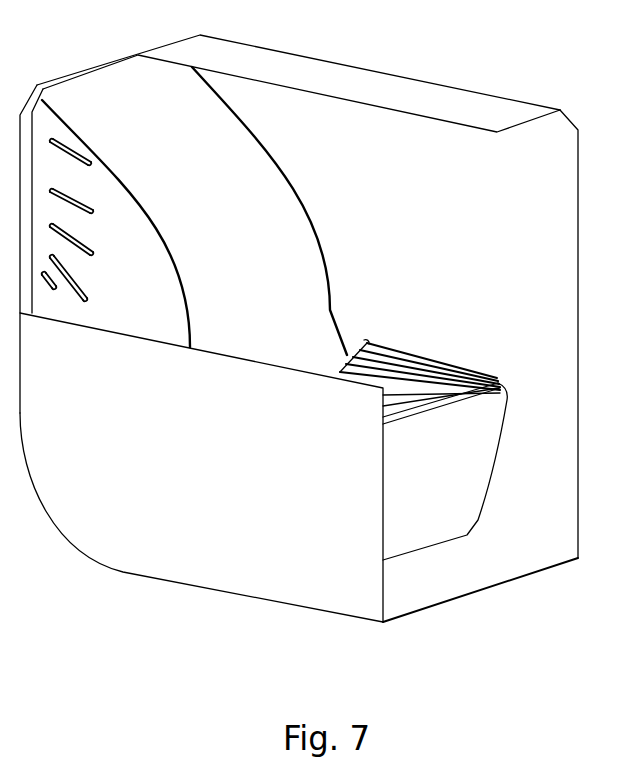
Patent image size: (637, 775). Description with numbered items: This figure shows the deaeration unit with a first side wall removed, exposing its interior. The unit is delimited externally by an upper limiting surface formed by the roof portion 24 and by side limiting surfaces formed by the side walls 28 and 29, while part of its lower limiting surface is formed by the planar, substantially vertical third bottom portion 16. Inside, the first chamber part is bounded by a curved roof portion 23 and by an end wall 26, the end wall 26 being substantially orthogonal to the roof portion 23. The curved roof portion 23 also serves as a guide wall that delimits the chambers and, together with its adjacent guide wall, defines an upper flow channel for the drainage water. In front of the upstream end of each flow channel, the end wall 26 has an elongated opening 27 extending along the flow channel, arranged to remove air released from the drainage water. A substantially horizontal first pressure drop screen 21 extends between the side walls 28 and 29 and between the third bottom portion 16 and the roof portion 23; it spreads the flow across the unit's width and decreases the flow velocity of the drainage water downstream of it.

The third bottom portion 16 is at (437, 485).
The first pressure drop screen 21 is at (467, 382).
The roof portion 23 is at (260, 247).
The roof portion 24 is at (411, 104).
The end wall 26 is at (150, 298).
The opening 27 is at (53, 138).
The side wall 28 is at (501, 334).
The side wall 29 is at (217, 473).